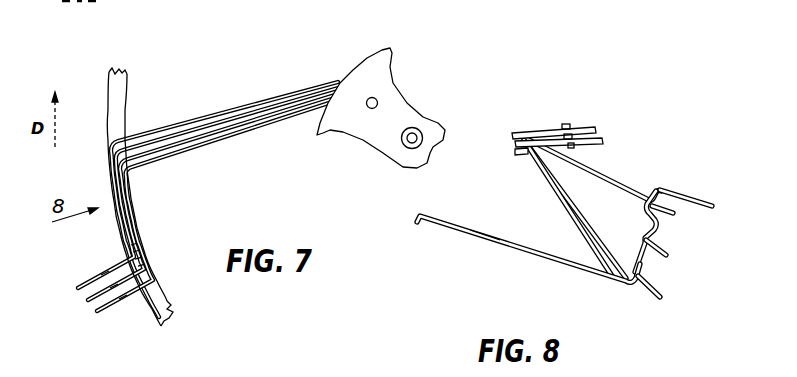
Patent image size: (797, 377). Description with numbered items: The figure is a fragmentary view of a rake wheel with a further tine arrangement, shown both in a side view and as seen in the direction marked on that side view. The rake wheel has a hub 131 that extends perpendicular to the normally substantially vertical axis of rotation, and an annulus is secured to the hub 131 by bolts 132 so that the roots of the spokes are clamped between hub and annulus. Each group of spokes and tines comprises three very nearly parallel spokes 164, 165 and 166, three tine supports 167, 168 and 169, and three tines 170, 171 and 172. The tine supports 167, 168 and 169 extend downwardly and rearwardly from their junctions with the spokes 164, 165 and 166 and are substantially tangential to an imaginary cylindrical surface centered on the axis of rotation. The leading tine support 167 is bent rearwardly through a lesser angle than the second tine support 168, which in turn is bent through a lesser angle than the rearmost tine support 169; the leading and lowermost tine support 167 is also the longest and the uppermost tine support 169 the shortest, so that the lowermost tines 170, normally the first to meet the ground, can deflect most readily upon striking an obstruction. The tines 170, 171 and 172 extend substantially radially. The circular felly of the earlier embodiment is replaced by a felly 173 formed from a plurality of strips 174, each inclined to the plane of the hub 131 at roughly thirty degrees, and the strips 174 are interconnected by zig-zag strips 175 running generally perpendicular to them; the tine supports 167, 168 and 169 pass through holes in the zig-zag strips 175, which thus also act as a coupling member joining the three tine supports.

In FIG. 7, the hub 131 is at (377, 60).
In FIG. 8, the hub 131 is at (514, 132).
In FIG. 7, the bolts 132 is at (375, 97).
In FIG. 8, the bolts 132 is at (567, 124).
In FIG. 7, the spoke 164 is at (201, 116).
In FIG. 7, the spoke 165 is at (263, 108).
In FIG. 7, the spoke 166 is at (223, 136).
In FIG. 8, the tine support 167 is at (556, 177).
In FIG. 8, the tine support 168 is at (590, 188).
In FIG. 7, the tine support 169 is at (127, 199).
In FIG. 8, the tine support 169 is at (623, 185).
In FIG. 7, the tines 170 is at (90, 270).
In FIG. 8, the tines 170 is at (662, 298).
In FIG. 7, the tines 171 is at (88, 299).
In FIG. 8, the tines 171 is at (667, 257).
In FIG. 7, the tines 172 is at (96, 311).
In FIG. 8, the tines 172 is at (674, 215).
In FIG. 7, the felly 173 is at (128, 105).
In FIG. 8, the felly 173 is at (497, 205).
In FIG. 7, the strips 174 is at (166, 291).
In FIG. 8, the strips 174 is at (703, 195).
In FIG. 8, the zig-zag strips 175 is at (659, 190).